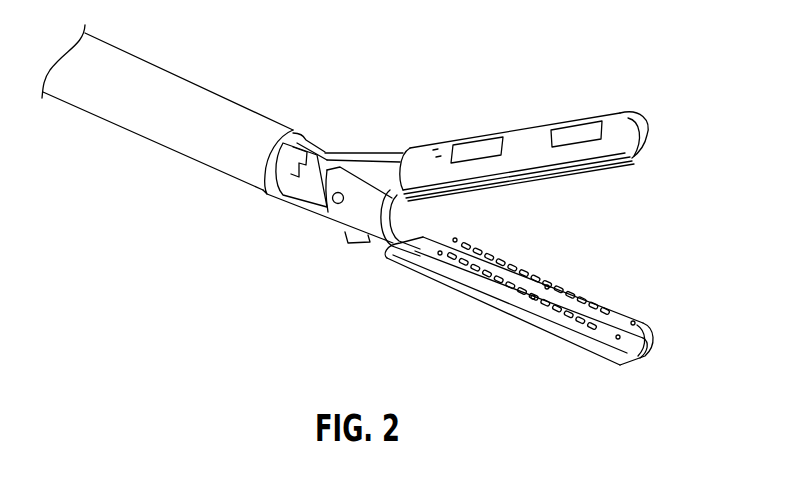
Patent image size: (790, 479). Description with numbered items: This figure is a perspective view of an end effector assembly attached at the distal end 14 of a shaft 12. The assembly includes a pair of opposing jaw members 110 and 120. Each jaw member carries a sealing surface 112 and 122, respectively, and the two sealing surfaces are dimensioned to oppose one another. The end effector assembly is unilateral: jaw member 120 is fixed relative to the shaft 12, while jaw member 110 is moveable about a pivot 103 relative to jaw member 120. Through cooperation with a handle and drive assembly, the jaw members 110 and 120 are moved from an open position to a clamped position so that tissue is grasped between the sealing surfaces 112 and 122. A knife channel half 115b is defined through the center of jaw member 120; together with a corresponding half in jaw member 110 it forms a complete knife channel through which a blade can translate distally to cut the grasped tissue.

The shaft 12 is at (138, 63).
The distal end 14 is at (267, 125).
The pivot 103 is at (330, 203).
The jaw member 110 is at (582, 115).
The sealing surface 112 is at (557, 175).
The knife channel half 115b is at (593, 297).
The jaw member 120 is at (535, 328).
The sealing surface 122 is at (637, 323).